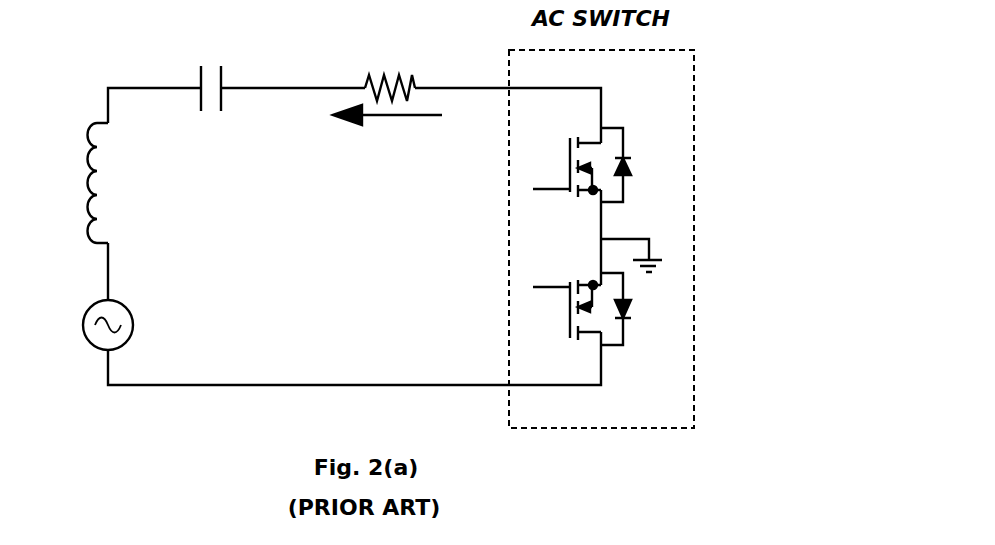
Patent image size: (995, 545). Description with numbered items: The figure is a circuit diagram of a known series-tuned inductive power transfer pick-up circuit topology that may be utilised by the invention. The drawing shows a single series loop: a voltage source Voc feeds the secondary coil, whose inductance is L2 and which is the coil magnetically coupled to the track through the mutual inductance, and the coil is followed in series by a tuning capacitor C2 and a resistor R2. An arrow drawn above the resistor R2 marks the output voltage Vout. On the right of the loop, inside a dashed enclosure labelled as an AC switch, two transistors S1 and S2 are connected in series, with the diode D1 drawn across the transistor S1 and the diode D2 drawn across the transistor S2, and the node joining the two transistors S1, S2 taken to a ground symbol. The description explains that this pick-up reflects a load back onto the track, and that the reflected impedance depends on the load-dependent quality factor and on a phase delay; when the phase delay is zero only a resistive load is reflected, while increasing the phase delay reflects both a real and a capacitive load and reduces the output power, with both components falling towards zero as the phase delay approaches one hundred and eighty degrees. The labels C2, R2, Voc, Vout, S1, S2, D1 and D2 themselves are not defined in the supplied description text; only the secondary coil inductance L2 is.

The capacitor C2 is at (209, 76).
The resistor R2 is at (390, 69).
The inductance of the secondary coil L2 is at (74, 183).
The open-circuit voltage source Voc is at (83, 325).
The output voltage Vout is at (387, 137).
The switch transistor 1 S1 is at (562, 167).
The switch transistor 2 S2 is at (562, 310).
The diode 1 D1 is at (631, 165).
The diode 2 D2 is at (631, 309).